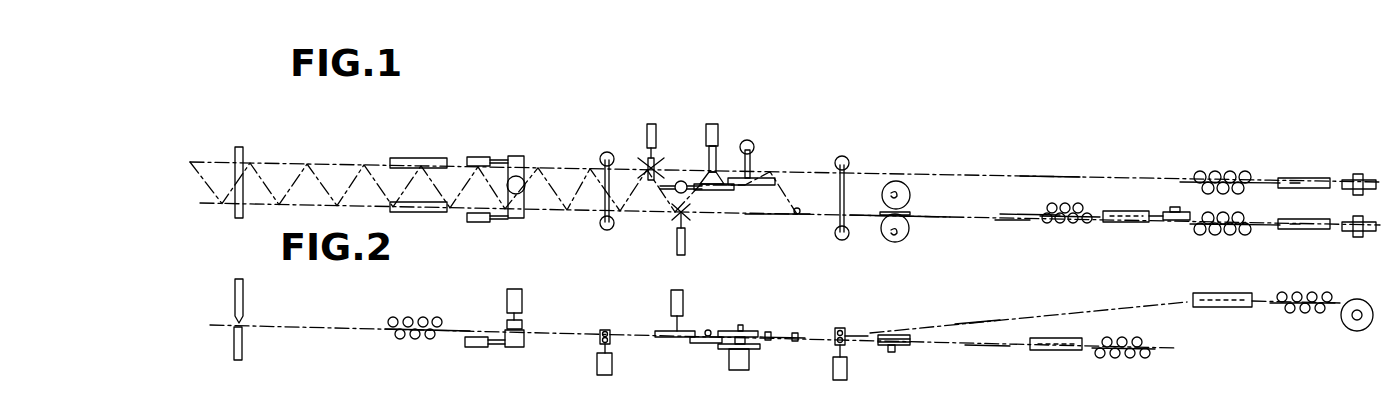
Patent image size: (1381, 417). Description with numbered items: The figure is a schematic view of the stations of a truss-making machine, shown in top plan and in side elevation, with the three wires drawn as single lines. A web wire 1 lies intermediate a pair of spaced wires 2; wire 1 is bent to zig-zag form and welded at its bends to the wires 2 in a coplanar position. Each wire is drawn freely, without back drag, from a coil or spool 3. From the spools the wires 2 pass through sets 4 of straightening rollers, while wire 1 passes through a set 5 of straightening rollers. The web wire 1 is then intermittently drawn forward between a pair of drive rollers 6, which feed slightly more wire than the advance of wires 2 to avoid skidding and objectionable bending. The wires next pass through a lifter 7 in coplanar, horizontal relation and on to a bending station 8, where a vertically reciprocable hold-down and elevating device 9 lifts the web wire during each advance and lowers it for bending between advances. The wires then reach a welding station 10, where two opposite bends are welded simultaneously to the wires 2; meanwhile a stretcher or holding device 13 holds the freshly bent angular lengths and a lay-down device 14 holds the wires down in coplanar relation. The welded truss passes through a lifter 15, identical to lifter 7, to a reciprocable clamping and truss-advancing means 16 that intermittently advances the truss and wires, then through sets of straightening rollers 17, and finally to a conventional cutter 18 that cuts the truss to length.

In FIG. 1, the wire 1 is at (1016, 213).
In FIG. 2, the wire 1 is at (988, 346).
In FIG. 1, the spaced wires 2 is at (1052, 176).
In FIG. 2, the spaced wires 2 is at (982, 321).
In FIG. 1, the coils or spools 3 is at (1350, 178).
In FIG. 2, the coils or spools 3 is at (1339, 322).
In FIG. 1, the sets of straightening rollers 4 is at (1290, 176).
In FIG. 2, the sets of straightening rollers 4 is at (1282, 313).
In FIG. 1, the set of straightening rollers 5 is at (1085, 202).
In FIG. 2, the set of straightening rollers 5 is at (1078, 334).
In FIG. 1, the drive rollers 6 is at (906, 215).
In FIG. 2, the drive rollers 6 is at (900, 350).
In FIG. 1, the lifter 7 is at (850, 178).
In FIG. 2, the lifter 7 is at (850, 330).
In FIG. 1, the bending station 8 is at (766, 208).
In FIG. 2, the bending station 8 is at (777, 343).
In FIG. 1, the hold-down and elevating device 9 is at (753, 172).
In FIG. 2, the hold-down and elevating device 9 is at (748, 328).
In FIG. 1, the welding station 10 is at (643, 160).
In FIG. 1, the stretcher or holding device 13 is at (722, 168).
In FIG. 2, the stretcher or holding device 13 is at (711, 346).
In FIG. 1, the lay-down device 14 is at (680, 179).
In FIG. 2, the lay-down device 14 is at (688, 328).
In FIG. 1, the lifter 15 is at (598, 164).
In FIG. 2, the lifter 15 is at (628, 300).
In FIG. 1, the clamping and truss-advancing means 16 is at (516, 154).
In FIG. 2, the clamping and truss-advancing means 16 is at (525, 324).
In FIG. 1, the sets of straightening rollers 17 is at (419, 156).
In FIG. 2, the sets of straightening rollers 17 is at (428, 316).
In FIG. 1, the cutter 18 is at (246, 157).
In FIG. 2, the cutter 18 is at (246, 316).